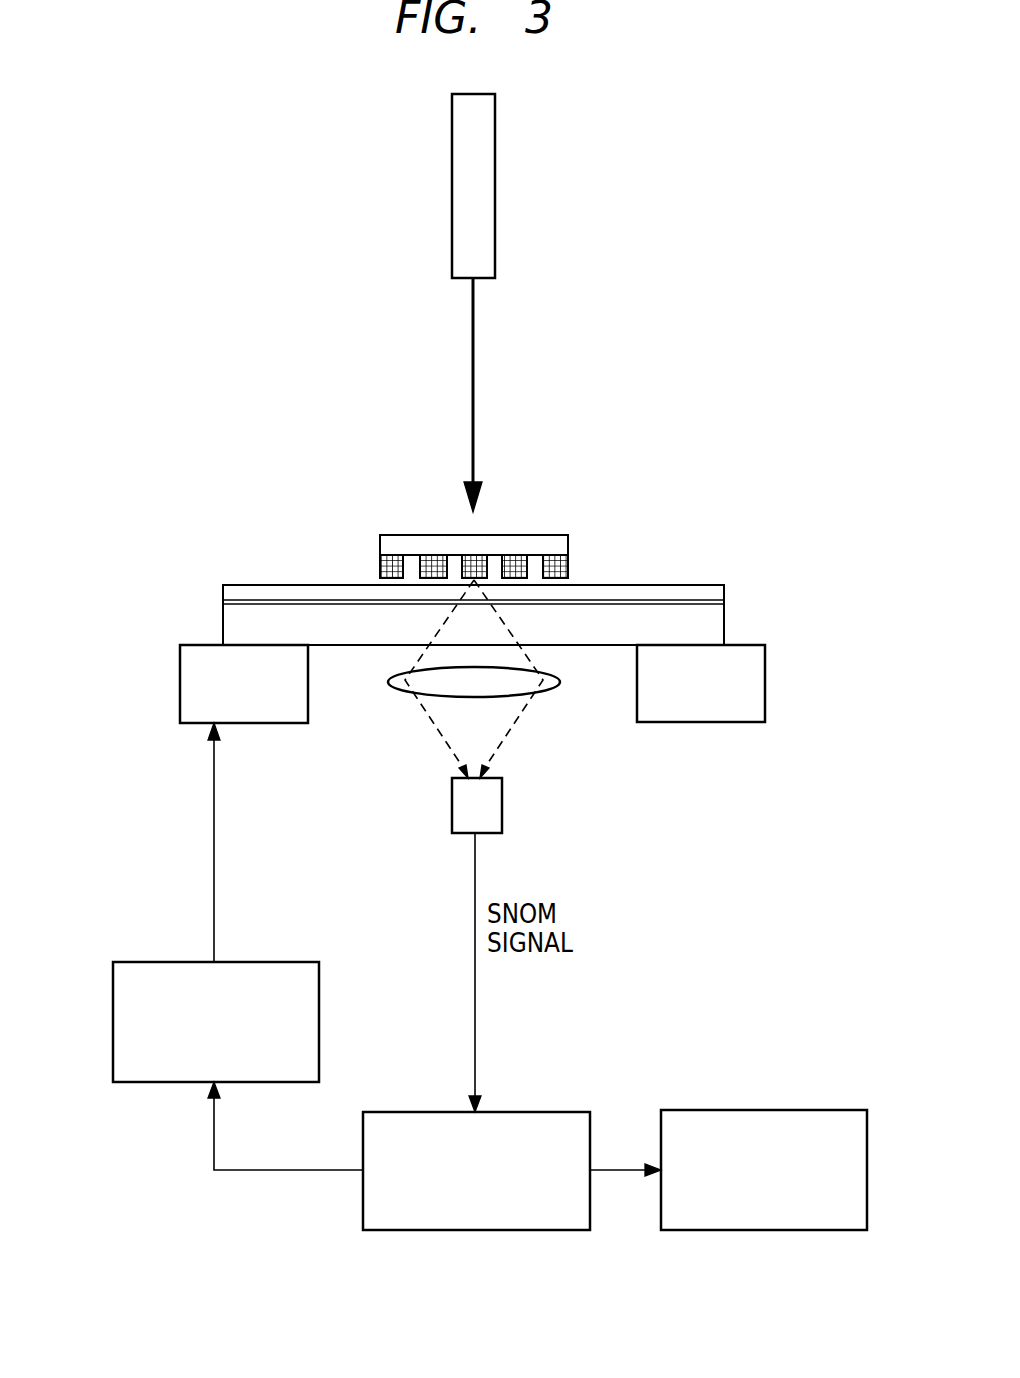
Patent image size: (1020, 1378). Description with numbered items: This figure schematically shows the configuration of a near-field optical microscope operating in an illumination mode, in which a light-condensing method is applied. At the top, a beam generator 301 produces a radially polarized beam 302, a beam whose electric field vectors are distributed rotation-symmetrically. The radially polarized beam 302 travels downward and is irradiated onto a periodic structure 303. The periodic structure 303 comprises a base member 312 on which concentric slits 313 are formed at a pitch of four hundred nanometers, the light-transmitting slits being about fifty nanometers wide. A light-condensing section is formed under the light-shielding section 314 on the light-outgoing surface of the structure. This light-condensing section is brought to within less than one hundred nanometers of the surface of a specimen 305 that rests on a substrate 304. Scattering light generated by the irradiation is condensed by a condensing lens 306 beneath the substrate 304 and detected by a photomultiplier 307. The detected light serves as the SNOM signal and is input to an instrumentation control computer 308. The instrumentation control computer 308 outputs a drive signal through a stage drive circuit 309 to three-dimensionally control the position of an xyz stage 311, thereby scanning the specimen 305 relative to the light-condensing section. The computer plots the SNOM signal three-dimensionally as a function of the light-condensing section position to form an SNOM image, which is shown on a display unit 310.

The beam generator 301 is at (496, 165).
The radially polarized beam 302 is at (470, 372).
The periodic structure 303 is at (543, 495).
The substrate 304 is at (413, 570).
The specimen 305 is at (303, 590).
The condensing lens 306 is at (548, 690).
The photomultiplier 307 is at (452, 808).
The instrumentation control computer 308 is at (530, 1230).
The stage drive circuit 309 is at (160, 960).
The display unit 310 is at (820, 1230).
The xyz stage 311 is at (180, 688).
The base member 312 is at (570, 548).
The concentric slits 313 is at (570, 571).
The light-shielding section 314 is at (476, 553).